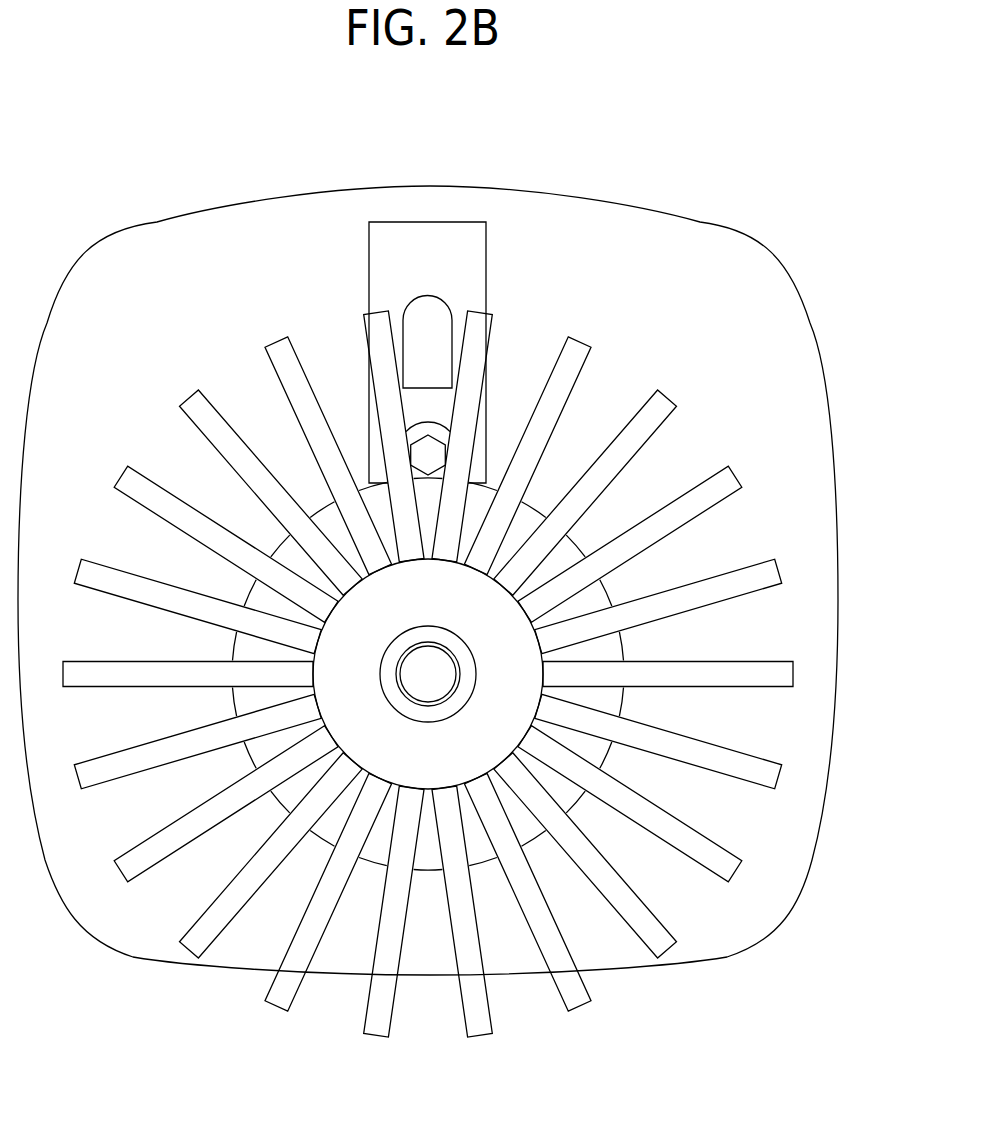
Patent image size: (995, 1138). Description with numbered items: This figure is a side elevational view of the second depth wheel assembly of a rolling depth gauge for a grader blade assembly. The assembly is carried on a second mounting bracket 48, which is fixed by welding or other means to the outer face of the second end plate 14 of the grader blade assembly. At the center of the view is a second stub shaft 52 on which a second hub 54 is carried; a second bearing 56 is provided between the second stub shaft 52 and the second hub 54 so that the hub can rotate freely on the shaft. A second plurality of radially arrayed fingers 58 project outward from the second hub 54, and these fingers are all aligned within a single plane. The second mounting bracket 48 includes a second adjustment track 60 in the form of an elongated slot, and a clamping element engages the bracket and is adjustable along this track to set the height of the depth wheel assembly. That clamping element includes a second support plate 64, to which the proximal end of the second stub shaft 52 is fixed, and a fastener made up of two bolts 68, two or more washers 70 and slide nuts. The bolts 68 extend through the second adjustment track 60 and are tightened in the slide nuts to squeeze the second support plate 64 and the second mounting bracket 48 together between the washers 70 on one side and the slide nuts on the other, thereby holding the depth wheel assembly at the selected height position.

The second end plate 14 is at (720, 253).
The second mounting bracket 48 is at (377, 245).
The second stub shaft 52 is at (430, 690).
The second hub 54 is at (592, 750).
The second bearing 56 is at (433, 635).
The second plurality of radially arrayed fingers 58 is at (658, 407).
The second adjustment track 60 is at (511, 266).
The second support plate 64 is at (428, 400).
The bolts 68 is at (440, 380).
The washers 70 is at (417, 428).